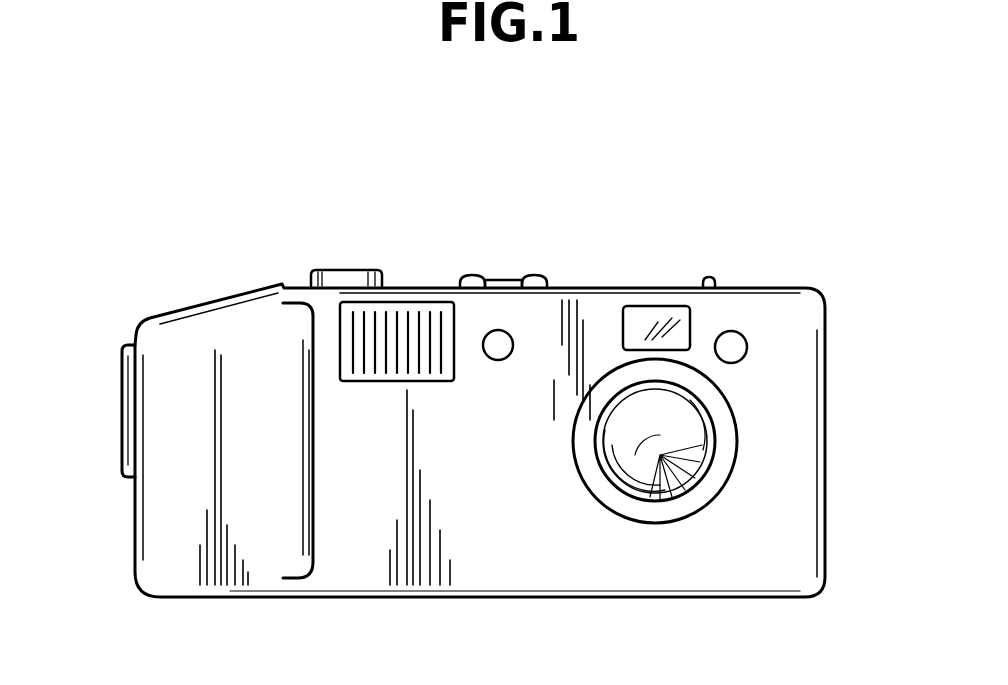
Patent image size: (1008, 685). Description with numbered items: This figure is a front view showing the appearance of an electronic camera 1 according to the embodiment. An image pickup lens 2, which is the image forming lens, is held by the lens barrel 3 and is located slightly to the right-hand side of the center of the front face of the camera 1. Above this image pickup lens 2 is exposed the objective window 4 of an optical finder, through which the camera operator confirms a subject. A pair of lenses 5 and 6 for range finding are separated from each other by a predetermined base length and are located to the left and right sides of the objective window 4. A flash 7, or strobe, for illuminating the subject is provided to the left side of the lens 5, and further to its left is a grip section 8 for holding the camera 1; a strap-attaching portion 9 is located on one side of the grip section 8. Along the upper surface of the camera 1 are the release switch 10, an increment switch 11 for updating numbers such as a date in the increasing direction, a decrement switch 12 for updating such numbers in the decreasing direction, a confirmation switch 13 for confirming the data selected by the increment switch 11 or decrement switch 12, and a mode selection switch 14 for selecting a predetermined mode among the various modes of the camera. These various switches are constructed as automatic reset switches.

The camera 1 is at (826, 418).
The image pickup lens 2 is at (645, 500).
The lens barrel 3 is at (712, 495).
The objective window 4 is at (645, 322).
The lens for range finding 5 is at (499, 360).
The lens for range finding 6 is at (747, 347).
The flash 7 is at (408, 302).
The grip section 8 is at (197, 337).
The strap-attaching portion 9 is at (122, 430).
The release switch 10 is at (341, 270).
The increment switch 11 is at (472, 275).
The decrement switch 12 is at (535, 275).
The confirmation switch 13 is at (507, 280).
The mode selection switch 14 is at (709, 277).